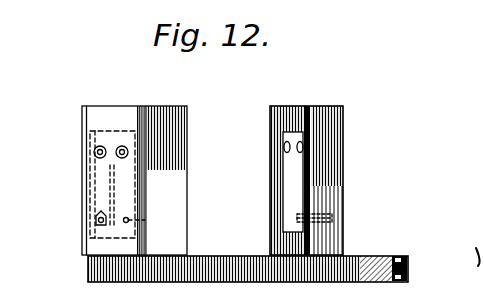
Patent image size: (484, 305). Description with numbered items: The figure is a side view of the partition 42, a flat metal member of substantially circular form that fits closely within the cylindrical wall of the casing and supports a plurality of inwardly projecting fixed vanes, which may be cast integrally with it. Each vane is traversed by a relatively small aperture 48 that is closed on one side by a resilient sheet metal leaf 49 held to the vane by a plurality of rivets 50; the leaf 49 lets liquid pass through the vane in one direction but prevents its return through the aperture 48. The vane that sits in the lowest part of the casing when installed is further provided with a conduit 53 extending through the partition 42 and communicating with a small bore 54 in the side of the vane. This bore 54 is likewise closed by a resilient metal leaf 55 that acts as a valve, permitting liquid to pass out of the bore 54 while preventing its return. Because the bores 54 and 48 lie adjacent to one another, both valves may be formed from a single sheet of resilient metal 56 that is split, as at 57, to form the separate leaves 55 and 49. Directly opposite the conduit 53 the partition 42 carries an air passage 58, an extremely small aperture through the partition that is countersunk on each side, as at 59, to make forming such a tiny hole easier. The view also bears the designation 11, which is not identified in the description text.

The frame 11 is at (397, 295).
The partition 42 is at (216, 280).
The aperture 48 is at (145, 220).
The resilient sheet metal leaf 49 is at (133, 192).
The rivets 50 is at (285, 147).
The conduit 53 is at (88, 262).
The bore 54 is at (97, 220).
The resilient metal leaf 55 is at (100, 190).
The sheet of resilient metal 56 is at (115, 131).
The split 57 is at (110, 178).
The air passage 58 is at (408, 262).
The countersink 59 is at (402, 256).